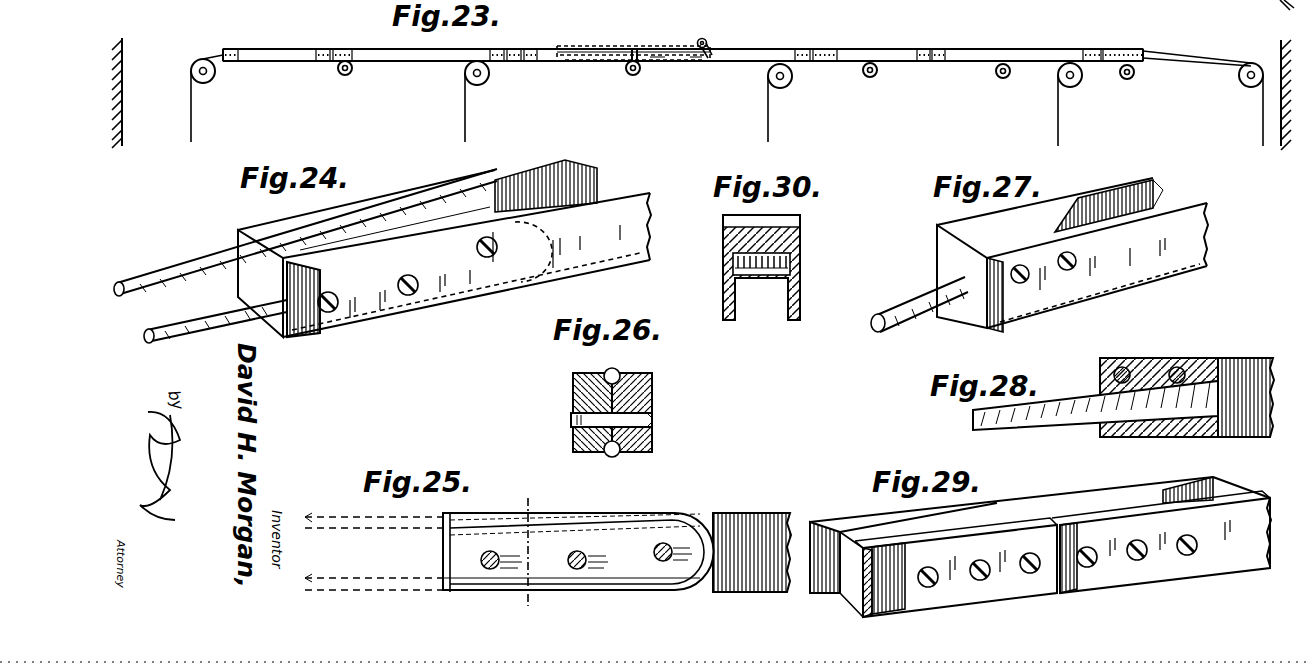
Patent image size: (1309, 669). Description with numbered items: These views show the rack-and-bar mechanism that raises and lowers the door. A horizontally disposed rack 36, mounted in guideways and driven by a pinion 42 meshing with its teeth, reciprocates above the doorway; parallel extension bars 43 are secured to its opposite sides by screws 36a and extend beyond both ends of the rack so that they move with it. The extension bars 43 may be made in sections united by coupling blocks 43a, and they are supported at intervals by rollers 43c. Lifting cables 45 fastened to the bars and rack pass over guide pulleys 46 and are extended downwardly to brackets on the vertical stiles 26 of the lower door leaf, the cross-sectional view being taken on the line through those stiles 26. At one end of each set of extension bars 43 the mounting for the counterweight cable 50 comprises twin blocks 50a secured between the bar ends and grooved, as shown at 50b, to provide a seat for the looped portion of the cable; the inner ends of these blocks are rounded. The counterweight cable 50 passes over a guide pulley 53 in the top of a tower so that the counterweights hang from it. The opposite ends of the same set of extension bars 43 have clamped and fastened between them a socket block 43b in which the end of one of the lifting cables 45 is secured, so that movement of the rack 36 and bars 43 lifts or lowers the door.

In FIG. 25, the vertical stiles 26 is at (526, 549).
In FIG. 23, the rack 36 is at (645, 47).
In FIG. 30, the rack 36 is at (802, 236).
In FIG. 23, the screws 36a is at (704, 55).
In FIG. 30, the screws 36a is at (728, 264).
In FIG. 23, the pinion 42 is at (707, 40).
In FIG. 23, the extension bars 43 is at (273, 44).
In FIG. 24, the extension bars 43 is at (600, 182).
In FIG. 30, the extension bars 43 is at (785, 336).
In FIG. 27, the extension bars 43 is at (1152, 186).
In FIG. 28, the extension bars 43 is at (1245, 364).
In FIG. 26, the extension bars 43 is at (573, 398).
In FIG. 25, the extension bars 43 is at (760, 524).
In FIG. 29, the extension bars 43 is at (1243, 500).
In FIG. 23, the coupling blocks 43a is at (336, 36).
In FIG. 29, the coupling blocks 43a is at (1058, 508).
In FIG. 27, the socket block 43b is at (967, 234).
In FIG. 28, the socket block 43b is at (1157, 368).
In FIG. 23, the rollers 43c is at (345, 75).
In FIG. 23, the lifting cable 45 is at (191, 98).
In FIG. 27, the lifting cable 45 is at (885, 314).
In FIG. 28, the lifting cable 45 is at (1048, 428).
In FIG. 23, the guide pulleys 46 is at (215, 73).
In FIG. 23, the counterweight cable 50 is at (1263, 120).
In FIG. 24, the counterweight cable 50 is at (180, 286).
In FIG. 26, the counterweight cable 50 is at (622, 372).
In FIG. 25, the counterweight cable 50 is at (372, 538).
In FIG. 24, the twin blocks 50a is at (262, 300).
In FIG. 26, the twin blocks 50a is at (553, 434).
In FIG. 25, the twin blocks 50a is at (630, 570).
In FIG. 24, the groove 50b is at (385, 236).
In FIG. 26, the groove 50b is at (573, 384).
In FIG. 25, the groove 50b is at (680, 512).
In FIG. 23, the guide pulleys 53 is at (1244, 86).